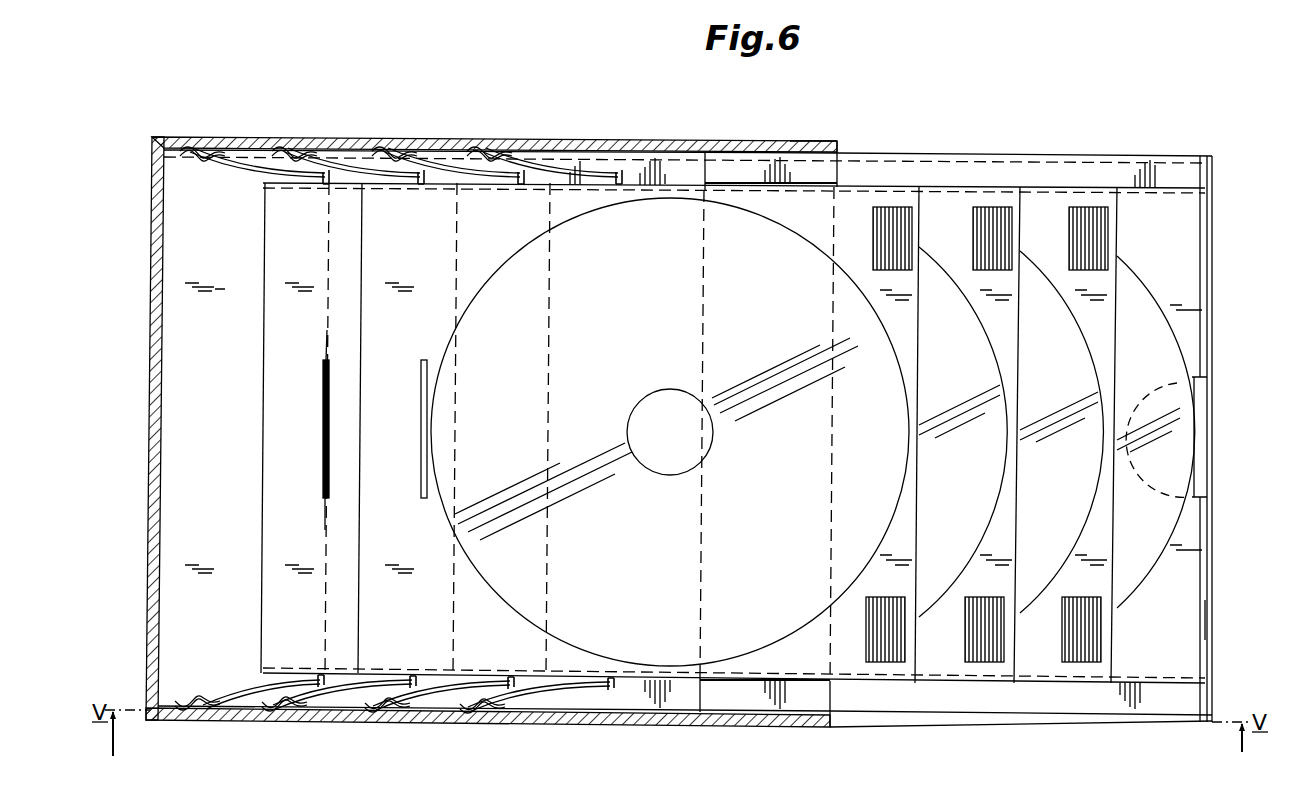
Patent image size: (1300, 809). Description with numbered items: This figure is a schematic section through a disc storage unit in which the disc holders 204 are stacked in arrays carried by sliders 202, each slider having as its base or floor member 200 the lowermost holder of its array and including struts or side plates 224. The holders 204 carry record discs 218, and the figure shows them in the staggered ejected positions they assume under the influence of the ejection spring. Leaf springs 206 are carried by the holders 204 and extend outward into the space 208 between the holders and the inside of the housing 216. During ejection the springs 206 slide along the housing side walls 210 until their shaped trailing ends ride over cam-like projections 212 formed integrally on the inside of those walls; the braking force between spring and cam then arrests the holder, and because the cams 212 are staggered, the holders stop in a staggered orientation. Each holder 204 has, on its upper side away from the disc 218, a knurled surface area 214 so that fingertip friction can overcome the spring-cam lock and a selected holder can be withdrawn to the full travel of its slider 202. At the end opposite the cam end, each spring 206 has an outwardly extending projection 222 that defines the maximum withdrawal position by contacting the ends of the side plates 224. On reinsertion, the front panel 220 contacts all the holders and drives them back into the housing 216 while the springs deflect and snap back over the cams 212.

The base or floor member 200 is at (1182, 622).
The slider 202 is at (1025, 153).
The disc holder 204 is at (312, 440).
The leaf spring 206 is at (228, 162).
The space 208 is at (235, 697).
The housing side wall 210 is at (672, 143).
The cam-like projection 212 is at (287, 157).
The knurled surface area 214 is at (977, 207).
The housing 216 is at (787, 137).
The record disc 218 is at (793, 444).
The front panel 220 is at (1213, 473).
The outwardly extending projection 222 is at (320, 173).
The strut or side plate 224 is at (735, 167).